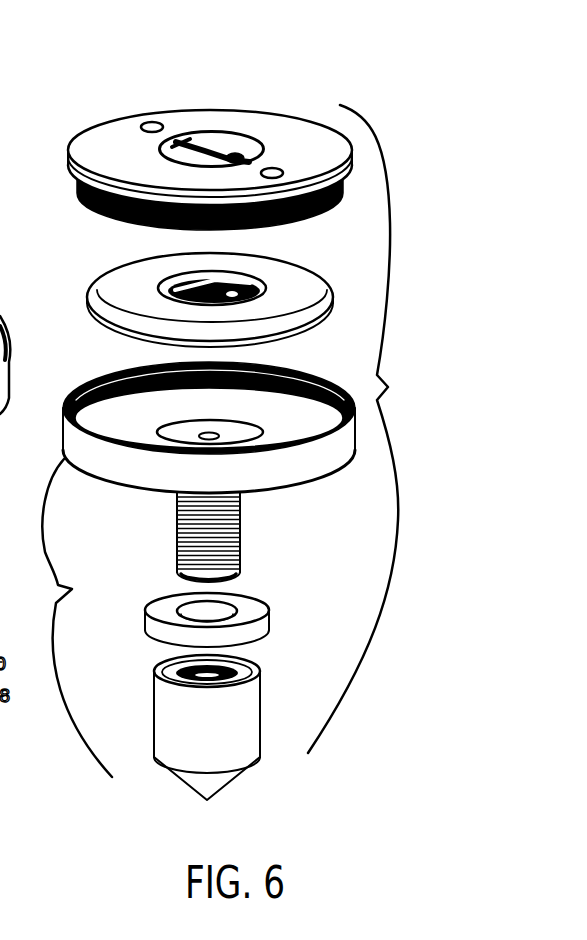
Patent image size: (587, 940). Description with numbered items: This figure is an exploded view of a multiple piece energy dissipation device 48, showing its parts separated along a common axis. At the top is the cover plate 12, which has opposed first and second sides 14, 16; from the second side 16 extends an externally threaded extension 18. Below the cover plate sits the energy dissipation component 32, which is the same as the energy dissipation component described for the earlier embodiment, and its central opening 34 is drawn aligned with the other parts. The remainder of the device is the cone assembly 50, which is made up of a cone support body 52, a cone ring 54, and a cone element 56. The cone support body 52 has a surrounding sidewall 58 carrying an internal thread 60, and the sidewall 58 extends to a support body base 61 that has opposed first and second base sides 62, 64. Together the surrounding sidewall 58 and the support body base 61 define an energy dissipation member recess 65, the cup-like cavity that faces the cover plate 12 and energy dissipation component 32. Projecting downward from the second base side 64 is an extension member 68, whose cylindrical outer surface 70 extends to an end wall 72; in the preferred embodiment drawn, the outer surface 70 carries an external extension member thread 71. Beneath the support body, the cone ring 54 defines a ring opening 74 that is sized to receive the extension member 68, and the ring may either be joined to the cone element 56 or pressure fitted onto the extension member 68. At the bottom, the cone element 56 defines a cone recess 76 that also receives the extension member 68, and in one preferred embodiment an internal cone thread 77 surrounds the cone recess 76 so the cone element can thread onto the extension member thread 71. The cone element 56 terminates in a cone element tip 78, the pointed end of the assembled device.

The cover plate 12 is at (185, 130).
The first side 14 is at (185, 108).
The second side 16 is at (65, 162).
The externally threaded extension 18 is at (78, 200).
The energy dissipation component 32 is at (210, 290).
The disk opening 34 is at (245, 283).
The multiple piece energy dissipation device 48 is at (365, 429).
The cone assembly 50 is at (68, 618).
The cone support body 52 is at (226, 554).
The cone ring 54 is at (180, 607).
The cone element 56 is at (201, 739).
The surrounding sidewall 58 is at (83, 471).
The internal thread 60 is at (218, 438).
The support body base 61 is at (192, 426).
The first base side 62 is at (110, 376).
The second base side 64 is at (282, 493).
The energy dissipation member recess 65 is at (335, 472).
The extension member 68 is at (240, 562).
The cylindrical outer surface 70 is at (242, 538).
The external extension member thread 71 is at (177, 536).
The end wall 72 is at (235, 578).
The ring opening 74 is at (180, 610).
The cone recess 76 is at (238, 672).
The internal cone thread 77 is at (177, 672).
The cone element tip 78 is at (207, 800).